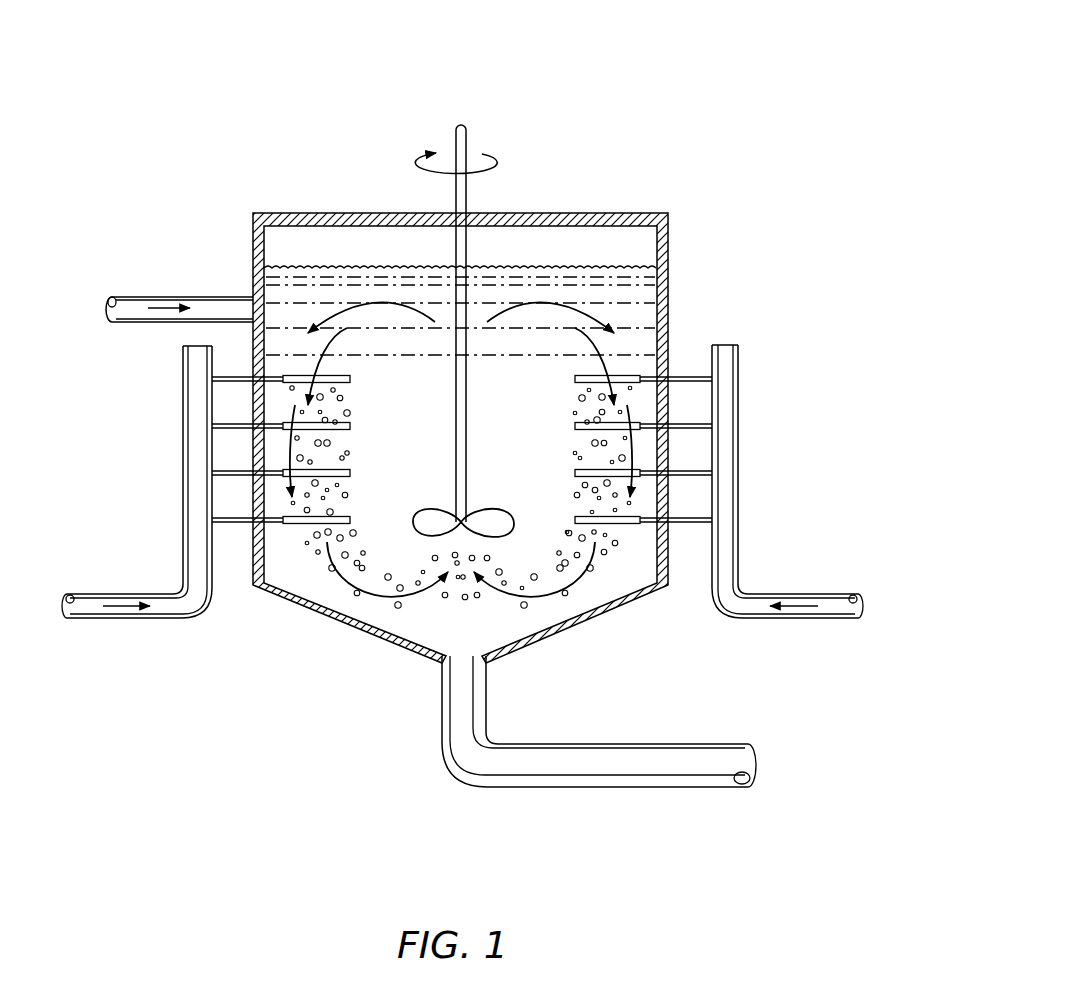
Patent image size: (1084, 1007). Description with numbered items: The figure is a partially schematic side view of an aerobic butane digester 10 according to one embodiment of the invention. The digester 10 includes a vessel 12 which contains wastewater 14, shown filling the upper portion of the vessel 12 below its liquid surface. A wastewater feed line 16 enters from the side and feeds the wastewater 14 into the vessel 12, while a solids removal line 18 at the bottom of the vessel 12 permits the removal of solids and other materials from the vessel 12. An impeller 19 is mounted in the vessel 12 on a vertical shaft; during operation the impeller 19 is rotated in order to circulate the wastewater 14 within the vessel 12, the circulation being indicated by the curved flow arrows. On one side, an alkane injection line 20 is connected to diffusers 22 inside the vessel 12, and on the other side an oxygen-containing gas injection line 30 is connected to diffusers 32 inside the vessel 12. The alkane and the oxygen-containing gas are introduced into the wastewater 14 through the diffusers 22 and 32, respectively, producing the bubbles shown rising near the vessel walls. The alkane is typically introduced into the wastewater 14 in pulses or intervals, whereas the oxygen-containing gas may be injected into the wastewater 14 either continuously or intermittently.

The aerobic butane digester 10 is at (655, 72).
The vessel 12 is at (665, 243).
The wastewater 14 is at (510, 287).
The wastewater feed line 16 is at (157, 303).
The solids removal line 18 is at (618, 778).
The impeller 19 is at (495, 517).
The alkane injection line 20 is at (127, 613).
The diffusers 22 is at (350, 425).
The oxygen-containing gas injection line 30 is at (822, 613).
The diffusers 32 is at (575, 425).